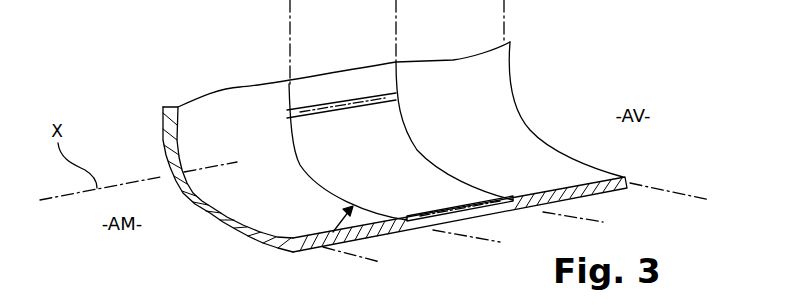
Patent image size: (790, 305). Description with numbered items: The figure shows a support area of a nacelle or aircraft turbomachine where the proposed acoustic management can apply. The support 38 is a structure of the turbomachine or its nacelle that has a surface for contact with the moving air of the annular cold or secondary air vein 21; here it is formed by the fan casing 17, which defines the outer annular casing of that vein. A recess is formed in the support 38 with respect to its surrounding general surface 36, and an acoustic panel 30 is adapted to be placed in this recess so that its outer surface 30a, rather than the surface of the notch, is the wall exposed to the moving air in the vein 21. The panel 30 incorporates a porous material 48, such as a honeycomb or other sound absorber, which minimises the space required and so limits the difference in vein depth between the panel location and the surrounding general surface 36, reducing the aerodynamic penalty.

The acoustic panel 30 is at (343, 155).
The outer surface of panel 30a is at (360, 118).
The surrounding general surface 36 is at (500, 142).
The annular air vein 21 is at (592, 52).
The support 38 is at (215, 220).
The fan casing 17 is at (327, 247).
The porous material 48 is at (462, 222).